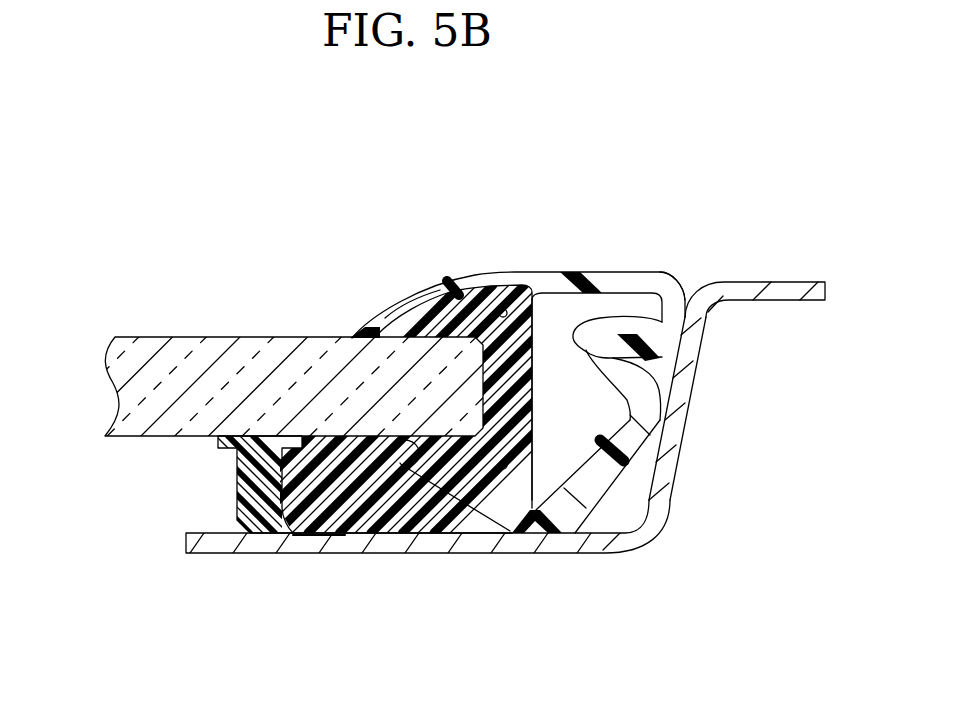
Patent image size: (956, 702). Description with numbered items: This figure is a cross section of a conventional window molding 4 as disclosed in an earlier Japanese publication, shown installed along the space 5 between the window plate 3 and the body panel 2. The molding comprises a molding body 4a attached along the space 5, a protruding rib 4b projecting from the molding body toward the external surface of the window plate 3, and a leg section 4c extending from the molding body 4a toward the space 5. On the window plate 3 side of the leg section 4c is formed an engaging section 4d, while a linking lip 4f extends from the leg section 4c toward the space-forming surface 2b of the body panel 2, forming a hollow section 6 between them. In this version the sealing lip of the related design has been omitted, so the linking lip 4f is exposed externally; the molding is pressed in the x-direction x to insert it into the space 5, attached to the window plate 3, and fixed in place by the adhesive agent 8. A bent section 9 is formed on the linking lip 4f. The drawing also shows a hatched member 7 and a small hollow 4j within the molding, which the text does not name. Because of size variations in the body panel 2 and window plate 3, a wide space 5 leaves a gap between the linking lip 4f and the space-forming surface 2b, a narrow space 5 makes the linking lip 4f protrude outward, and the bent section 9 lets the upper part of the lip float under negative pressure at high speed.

The body panel 2 is at (753, 280).
The space-forming surface 2b is at (686, 450).
The window plate 3 is at (150, 336).
The window molding 4 is at (455, 388).
The molding body 4a is at (462, 272).
The protruding rib 4b is at (360, 327).
The leg section 4c is at (522, 413).
The engaging section 4d is at (433, 463).
The linking lip 4f is at (643, 272).
The seal hollow channel 4j is at (501, 470).
The space 5 is at (627, 512).
The hollow section 6 is at (557, 475).
The fastener block 7 is at (237, 485).
The adhesive agent 8 is at (315, 534).
The bent section 9 is at (658, 299).
The x-direction x is at (607, 200).